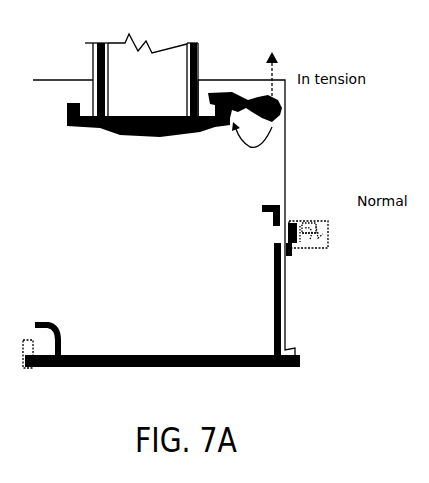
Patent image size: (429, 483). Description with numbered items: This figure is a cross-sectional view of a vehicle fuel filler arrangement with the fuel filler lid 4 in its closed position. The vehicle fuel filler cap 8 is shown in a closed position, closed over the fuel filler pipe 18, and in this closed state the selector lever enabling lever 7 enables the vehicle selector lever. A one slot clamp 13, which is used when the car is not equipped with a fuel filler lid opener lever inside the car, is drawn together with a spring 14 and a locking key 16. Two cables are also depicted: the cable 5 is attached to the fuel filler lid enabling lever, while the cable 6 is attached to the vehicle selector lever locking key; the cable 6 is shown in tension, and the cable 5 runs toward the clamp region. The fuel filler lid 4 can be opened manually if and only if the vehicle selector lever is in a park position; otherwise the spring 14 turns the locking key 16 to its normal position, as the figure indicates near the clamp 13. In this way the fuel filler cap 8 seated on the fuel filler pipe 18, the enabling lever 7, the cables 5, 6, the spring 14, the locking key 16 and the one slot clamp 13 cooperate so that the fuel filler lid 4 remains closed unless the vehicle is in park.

The fuel filler pipe 18 is at (84, 62).
The vehicle fuel filler cap 8 is at (128, 137).
The selector lever enabling lever 7 is at (230, 86).
The cable 6 is at (273, 63).
The cable 5 is at (277, 231).
The spring 14 is at (311, 216).
The locking key 16 is at (282, 232).
The one slot clamp 13 is at (268, 308).
The fuel filler lid 4 is at (203, 345).